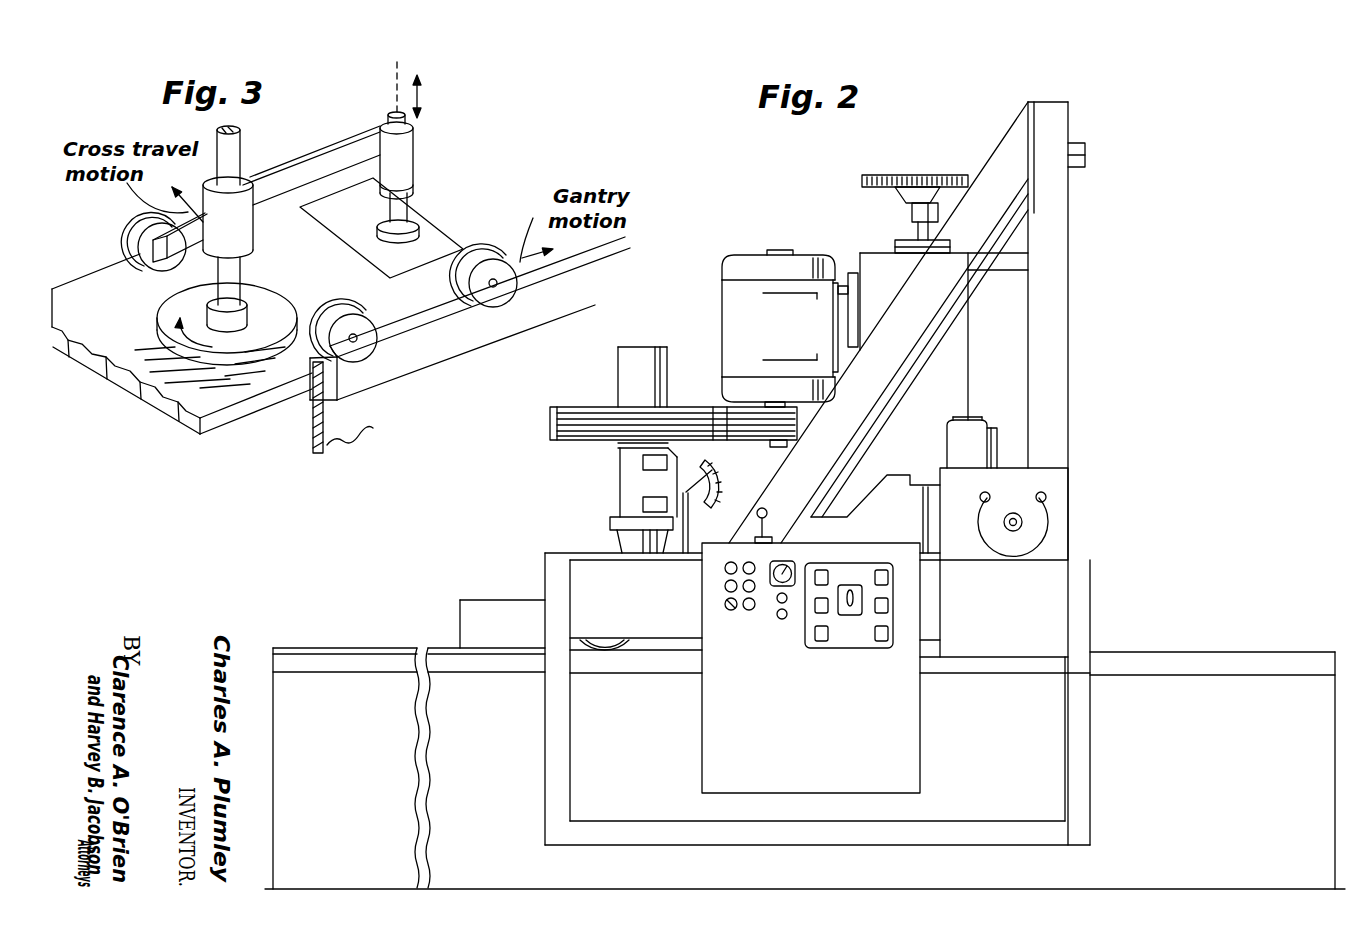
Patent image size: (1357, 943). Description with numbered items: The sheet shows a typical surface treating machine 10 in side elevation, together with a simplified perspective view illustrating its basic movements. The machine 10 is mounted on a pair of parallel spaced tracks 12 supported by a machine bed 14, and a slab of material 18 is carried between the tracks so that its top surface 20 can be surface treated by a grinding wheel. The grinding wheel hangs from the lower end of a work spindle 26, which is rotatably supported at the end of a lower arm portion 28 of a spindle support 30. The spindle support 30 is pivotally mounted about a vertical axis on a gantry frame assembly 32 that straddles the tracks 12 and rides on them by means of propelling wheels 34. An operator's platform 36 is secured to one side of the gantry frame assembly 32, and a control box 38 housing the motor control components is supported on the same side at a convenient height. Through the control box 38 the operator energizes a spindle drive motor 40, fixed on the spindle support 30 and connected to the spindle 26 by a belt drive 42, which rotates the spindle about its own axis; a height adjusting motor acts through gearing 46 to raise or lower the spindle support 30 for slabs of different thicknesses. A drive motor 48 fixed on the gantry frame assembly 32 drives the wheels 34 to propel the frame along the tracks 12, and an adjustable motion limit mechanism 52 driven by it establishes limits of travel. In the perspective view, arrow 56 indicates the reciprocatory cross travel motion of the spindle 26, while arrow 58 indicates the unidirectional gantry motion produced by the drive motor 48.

In FIG. 2, the surface treating machine 10 is at (805, 216).
In FIG. 3, the tracks 12 is at (403, 335).
In FIG. 2, the tracks 12 is at (388, 648).
In FIG. 2, the machine bed 14 is at (315, 700).
In FIG. 3, the slab of material 18 is at (137, 388).
In FIG. 3, the top surface 20 is at (130, 338).
In FIG. 3, the work spindle 26 is at (227, 143).
In FIG. 2, the work spindle 26 is at (637, 375).
In FIG. 2, the lower arm portion 28 is at (748, 470).
In FIG. 3, the spindle support 30 is at (318, 175).
In FIG. 2, the spindle support 30 is at (940, 366).
In FIG. 3, the gantry frame assembly 32 is at (458, 225).
In FIG. 2, the gantry frame assembly 32 is at (1074, 306).
In FIG. 3, the propelling wheels 34 is at (497, 290).
In FIG. 2, the propelling wheels 34 is at (610, 640).
In FIG. 2, the operator's platform 36 is at (923, 832).
In FIG. 2, the control box 38 is at (693, 740).
In FIG. 2, the spindle drive motor 40 is at (733, 306).
In FIG. 2, the belt drive 42 is at (600, 430).
In FIG. 2, the gearing 46 is at (877, 178).
In FIG. 2, the drive motor 48 is at (990, 432).
In FIG. 2, the adjustable motion limit mechanism 52 is at (1074, 510).
In FIG. 3, the arrow 56 is at (258, 240).
In FIG. 3, the arrow 58 is at (552, 304).